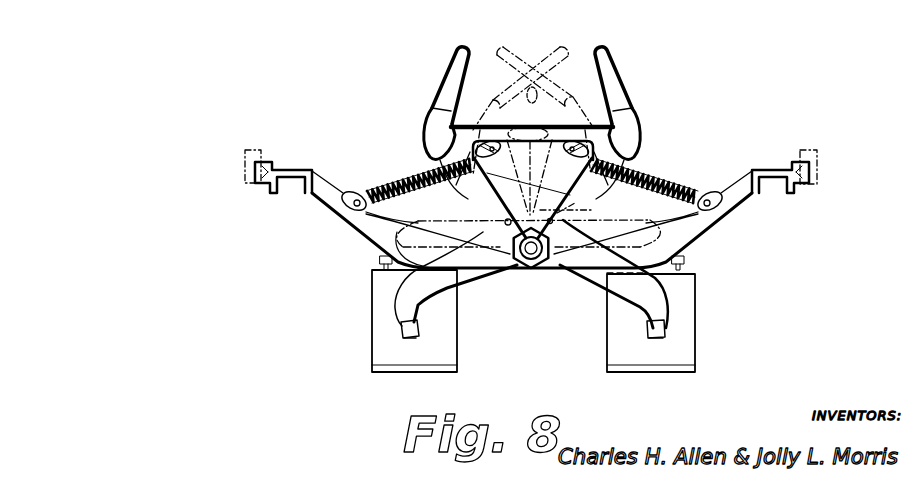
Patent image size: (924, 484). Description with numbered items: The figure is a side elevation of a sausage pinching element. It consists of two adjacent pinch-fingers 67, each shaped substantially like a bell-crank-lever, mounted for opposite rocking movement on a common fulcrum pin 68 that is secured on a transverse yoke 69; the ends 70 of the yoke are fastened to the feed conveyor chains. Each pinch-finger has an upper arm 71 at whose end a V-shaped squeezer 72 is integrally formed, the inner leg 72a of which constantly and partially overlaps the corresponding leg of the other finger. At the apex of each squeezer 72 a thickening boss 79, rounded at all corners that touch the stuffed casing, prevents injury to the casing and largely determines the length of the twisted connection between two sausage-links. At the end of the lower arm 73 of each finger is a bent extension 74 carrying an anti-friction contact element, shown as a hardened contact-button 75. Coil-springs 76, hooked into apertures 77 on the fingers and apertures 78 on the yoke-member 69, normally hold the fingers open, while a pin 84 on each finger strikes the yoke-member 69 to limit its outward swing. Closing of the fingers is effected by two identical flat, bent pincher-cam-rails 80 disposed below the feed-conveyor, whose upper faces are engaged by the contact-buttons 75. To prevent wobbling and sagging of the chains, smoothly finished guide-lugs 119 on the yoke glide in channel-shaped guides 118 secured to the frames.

The pinch-finger 67 is at (429, 108).
The fulcrum pin 68 is at (530, 262).
The transverse yoke 69 is at (356, 234).
The yoke end 70 is at (288, 170).
The upper arm 71 is at (488, 178).
The V-shaped squeezer 72 is at (457, 63).
The inner leg of the squeezer 72a is at (474, 127).
The lower arm 73 is at (443, 293).
The bent extension 74 is at (404, 315).
The hardened contact-button 75 is at (423, 334).
The coil-spring 76 is at (397, 190).
The aperture on finger 77 is at (680, 125).
The aperture on yoke-member 78 is at (354, 195).
The thickening boss 79 is at (434, 133).
The pincher-cam-rail 80 is at (371, 300).
The pin 84 is at (579, 208).
The channel-shaped guide 118 is at (244, 167).
The guide-lug 119 is at (271, 163).